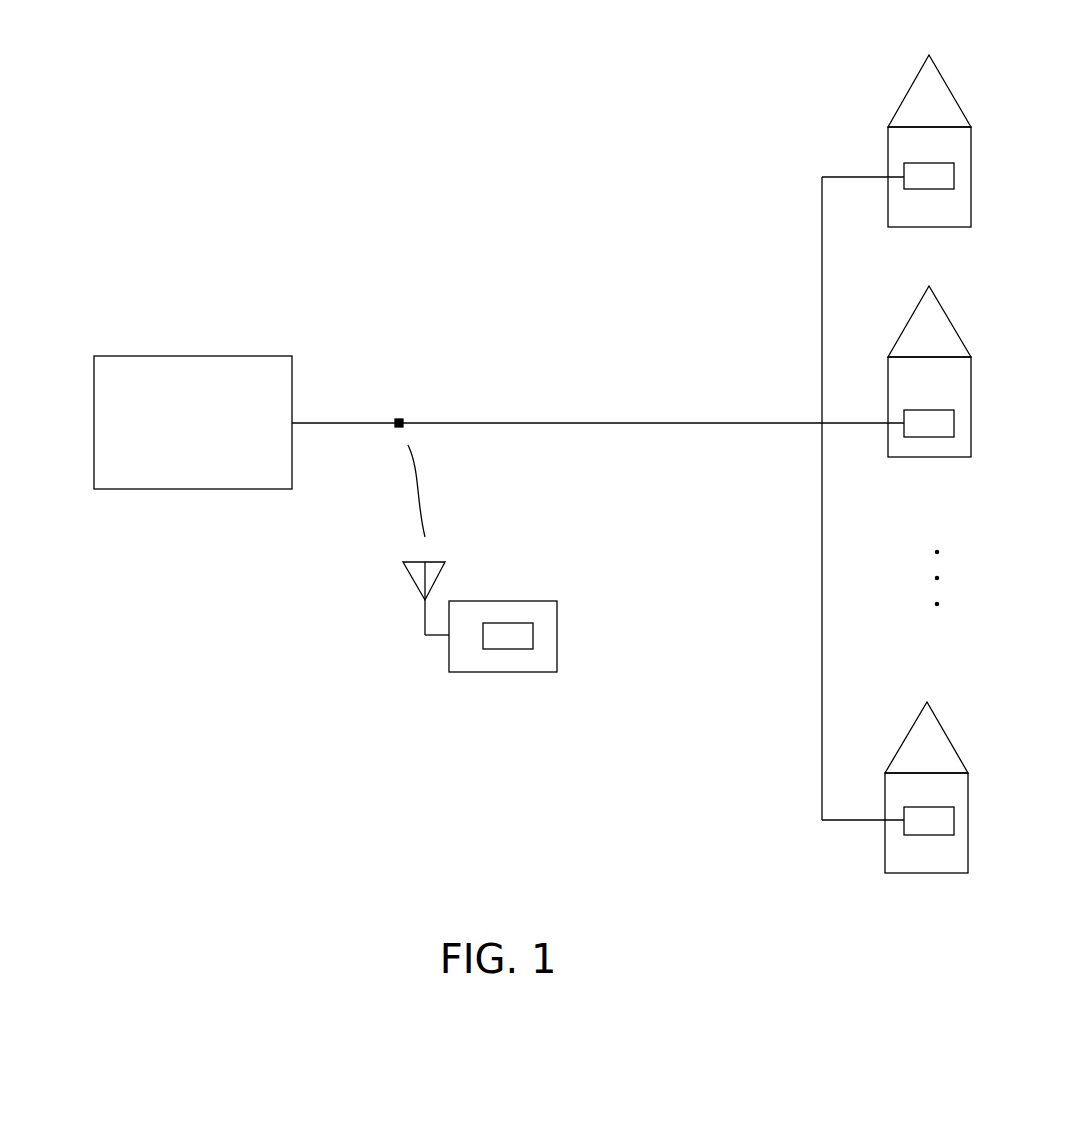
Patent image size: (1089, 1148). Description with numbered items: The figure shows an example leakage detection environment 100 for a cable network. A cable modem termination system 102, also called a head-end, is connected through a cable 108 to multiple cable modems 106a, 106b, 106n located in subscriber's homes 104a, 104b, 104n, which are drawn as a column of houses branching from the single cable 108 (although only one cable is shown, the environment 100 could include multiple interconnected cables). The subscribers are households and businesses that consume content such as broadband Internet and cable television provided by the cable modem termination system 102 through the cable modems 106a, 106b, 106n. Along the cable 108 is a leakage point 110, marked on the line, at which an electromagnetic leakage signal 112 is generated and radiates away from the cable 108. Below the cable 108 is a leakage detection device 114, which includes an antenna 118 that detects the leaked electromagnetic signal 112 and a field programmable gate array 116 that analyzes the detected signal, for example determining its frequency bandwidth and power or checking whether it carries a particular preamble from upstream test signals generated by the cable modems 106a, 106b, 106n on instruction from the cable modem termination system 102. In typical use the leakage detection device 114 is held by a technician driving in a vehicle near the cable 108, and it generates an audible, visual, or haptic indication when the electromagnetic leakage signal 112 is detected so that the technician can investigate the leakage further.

The leakage detection environment 100 is at (486, 909).
The cable modem termination system 102 is at (193, 422).
The subscriber's home 104a is at (951, 84).
The subscriber's home 104b is at (960, 332).
The subscriber's home 104n is at (955, 748).
The cable modem 106a is at (955, 178).
The cable modem 106b is at (955, 424).
The cable modem 106n is at (955, 821).
The cable 108 is at (488, 418).
The leakage point 110 is at (396, 393).
The electromagnetic leakage signal 112 is at (445, 502).
The leakage detection device 114 is at (553, 661).
The field programmable gate array 116 is at (523, 638).
The antenna 118 is at (437, 572).